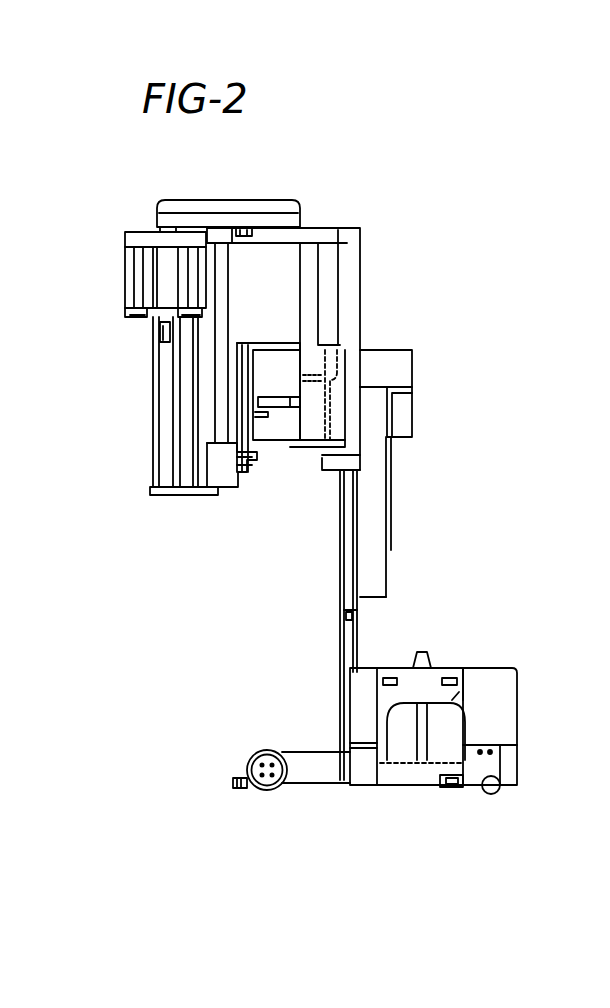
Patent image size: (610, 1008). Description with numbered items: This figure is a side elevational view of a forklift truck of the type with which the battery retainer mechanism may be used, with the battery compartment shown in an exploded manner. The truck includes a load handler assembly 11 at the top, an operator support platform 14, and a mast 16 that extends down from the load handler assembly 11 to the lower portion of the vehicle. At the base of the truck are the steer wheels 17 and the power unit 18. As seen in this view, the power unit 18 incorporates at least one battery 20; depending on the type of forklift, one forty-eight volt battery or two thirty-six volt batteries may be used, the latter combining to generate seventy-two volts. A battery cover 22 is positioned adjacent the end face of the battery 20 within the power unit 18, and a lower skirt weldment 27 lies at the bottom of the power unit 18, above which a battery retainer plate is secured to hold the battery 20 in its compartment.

The load handler assembly 11 is at (206, 208).
The operator support platform 14 is at (330, 216).
The mast 16 is at (338, 572).
The steer wheels 17 is at (498, 791).
The power unit 18 is at (522, 664).
The battery 20 is at (403, 722).
The battery cover 22 is at (460, 690).
The lower skirt weldment 27 is at (398, 775).